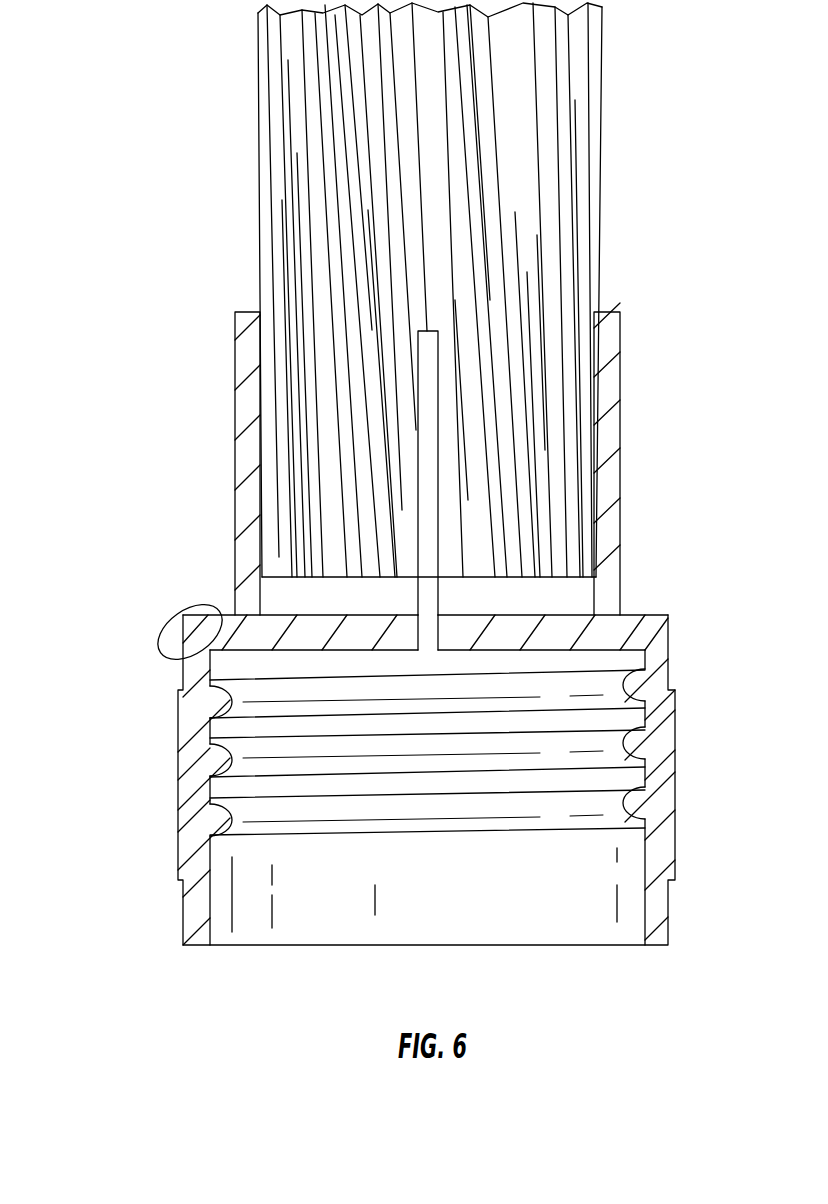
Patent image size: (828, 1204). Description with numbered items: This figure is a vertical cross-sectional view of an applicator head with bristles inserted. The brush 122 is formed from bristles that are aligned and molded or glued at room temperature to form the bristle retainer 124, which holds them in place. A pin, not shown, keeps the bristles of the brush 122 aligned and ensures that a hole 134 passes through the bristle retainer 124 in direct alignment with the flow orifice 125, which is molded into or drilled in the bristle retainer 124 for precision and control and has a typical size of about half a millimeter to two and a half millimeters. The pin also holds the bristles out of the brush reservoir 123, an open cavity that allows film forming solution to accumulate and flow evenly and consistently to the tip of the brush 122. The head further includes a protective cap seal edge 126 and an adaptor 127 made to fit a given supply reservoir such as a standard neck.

The brush 122 is at (482, 148).
The brush reservoir 123 is at (440, 350).
The bristle retainer 124 is at (515, 597).
The flow orifice 125 is at (427, 647).
The protective cap seal edge 126 is at (177, 615).
The adaptor 127 is at (188, 813).
The hole 134 is at (440, 595).